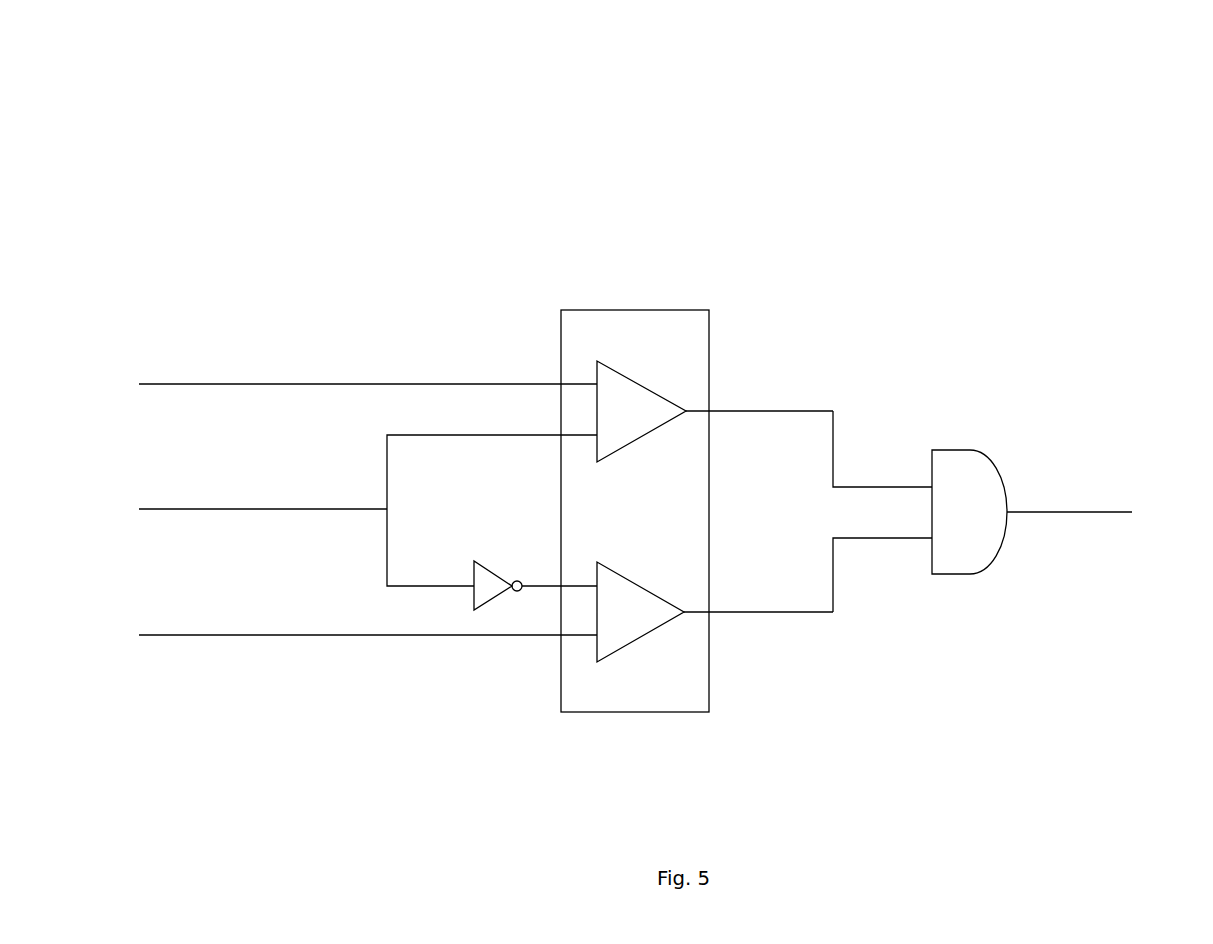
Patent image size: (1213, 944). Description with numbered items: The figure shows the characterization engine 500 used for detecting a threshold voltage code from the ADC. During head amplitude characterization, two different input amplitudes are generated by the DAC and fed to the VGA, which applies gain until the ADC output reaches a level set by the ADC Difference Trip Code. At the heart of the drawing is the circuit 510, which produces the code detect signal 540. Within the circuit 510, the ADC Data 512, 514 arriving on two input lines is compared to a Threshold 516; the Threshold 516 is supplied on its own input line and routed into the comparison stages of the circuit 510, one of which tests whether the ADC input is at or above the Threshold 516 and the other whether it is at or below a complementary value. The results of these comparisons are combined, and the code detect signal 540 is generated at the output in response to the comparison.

The characterization engine 500 is at (222, 140).
The circuit 510 is at (745, 362).
The ADC Data 512 is at (202, 346).
The ADC Data 514 is at (188, 584).
The Threshold 516 is at (177, 472).
The code detect signal 540 is at (1119, 450).